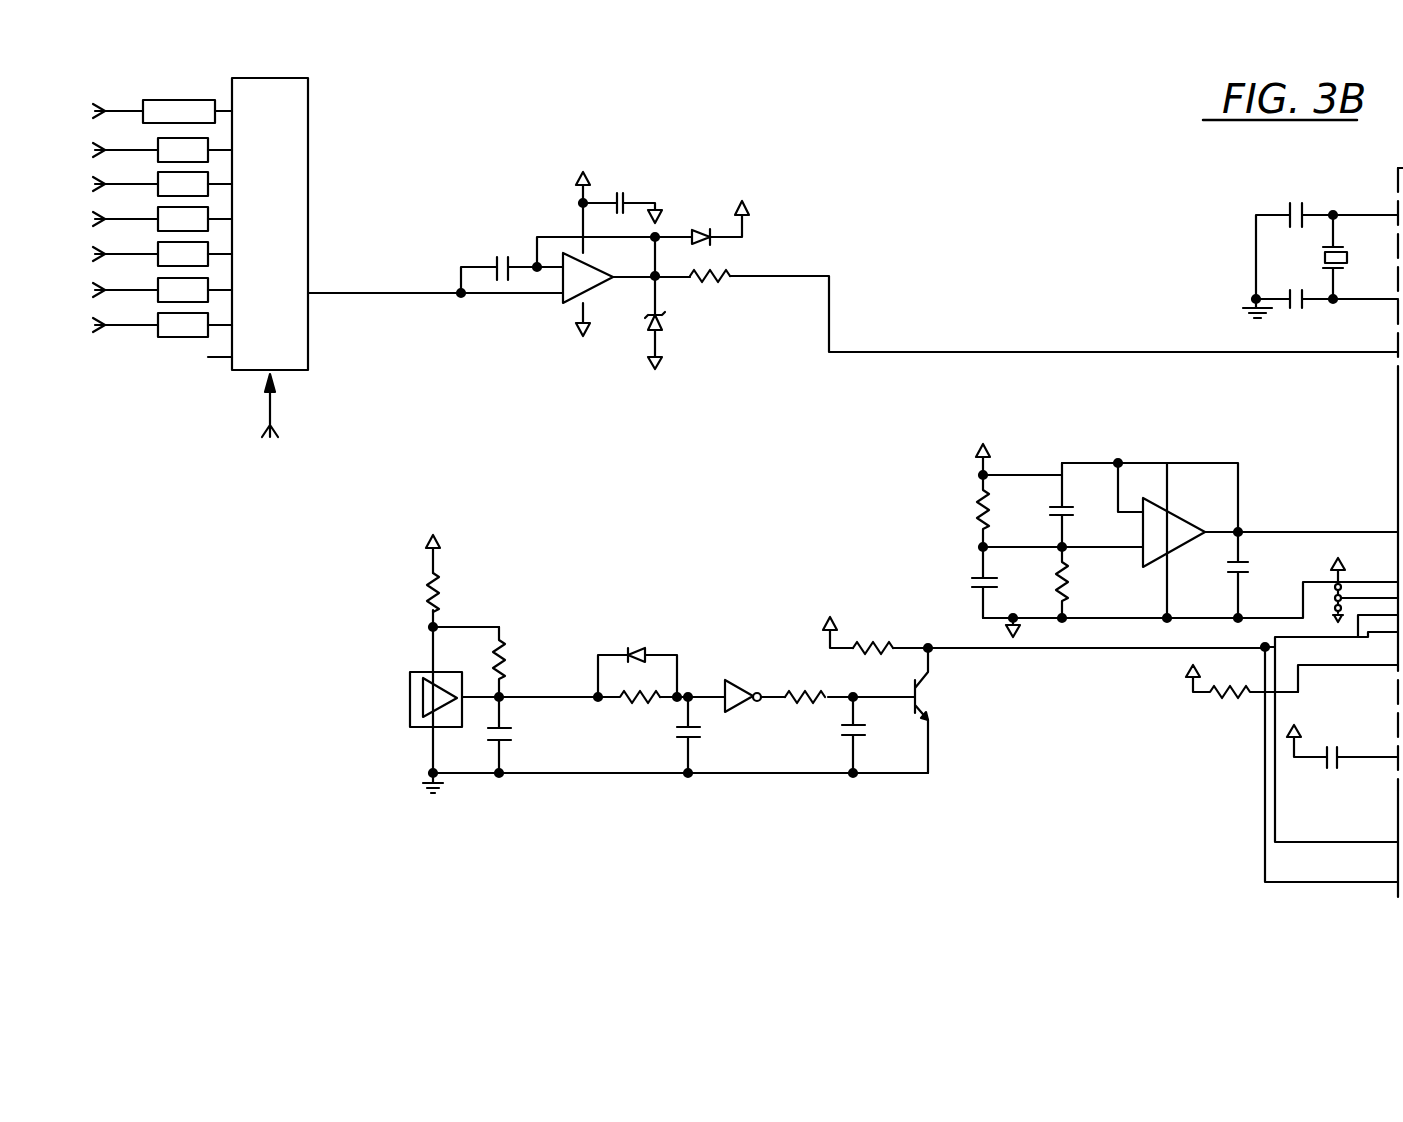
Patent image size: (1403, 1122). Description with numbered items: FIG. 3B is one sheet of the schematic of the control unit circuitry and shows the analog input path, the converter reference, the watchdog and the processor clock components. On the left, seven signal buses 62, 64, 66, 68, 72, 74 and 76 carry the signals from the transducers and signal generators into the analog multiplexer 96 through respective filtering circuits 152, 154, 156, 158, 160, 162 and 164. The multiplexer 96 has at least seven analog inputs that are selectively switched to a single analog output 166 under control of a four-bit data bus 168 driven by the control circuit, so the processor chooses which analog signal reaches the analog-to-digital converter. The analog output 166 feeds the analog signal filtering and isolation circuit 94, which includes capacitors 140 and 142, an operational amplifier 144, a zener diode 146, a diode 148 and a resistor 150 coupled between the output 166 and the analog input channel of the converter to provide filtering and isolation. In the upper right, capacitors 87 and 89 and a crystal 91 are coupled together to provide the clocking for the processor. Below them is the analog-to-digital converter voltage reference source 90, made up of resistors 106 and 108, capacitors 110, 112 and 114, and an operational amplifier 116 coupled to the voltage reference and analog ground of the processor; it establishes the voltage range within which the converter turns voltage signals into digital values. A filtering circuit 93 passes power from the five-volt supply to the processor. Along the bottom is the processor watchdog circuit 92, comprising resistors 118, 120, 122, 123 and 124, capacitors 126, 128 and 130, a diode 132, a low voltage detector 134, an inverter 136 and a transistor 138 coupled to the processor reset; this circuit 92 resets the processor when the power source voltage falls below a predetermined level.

The signal bus 62 is at (118, 104).
The signal bus 64 is at (134, 146).
The signal bus 66 is at (134, 180).
The signal bus 68 is at (134, 215).
The signal bus 72 is at (134, 250).
The signal bus 74 is at (134, 286).
The signal bus 76 is at (134, 321).
The filtering circuit 152 is at (190, 73).
The filtering circuit 154 is at (195, 150).
The filtering circuit 156 is at (195, 184).
The filtering circuit 158 is at (195, 219).
The filtering circuit 160 is at (195, 254).
The filtering circuit 162 is at (195, 290).
The filtering circuit 164 is at (195, 325).
The analog multiplexer 96 is at (310, 93).
The analog output 166 is at (395, 262).
The 4-bit data bus 168 is at (268, 394).
The analog signal filtering and isolation circuit 94 is at (728, 172).
The capacitor 140 is at (500, 250).
The capacitor 142 is at (620, 194).
The operational amplifier 144 is at (560, 298).
The zener diode 146 is at (668, 326).
The diode 148 is at (703, 228).
The resistor 150 is at (712, 288).
The capacitor 87 is at (1287, 213).
The capacitor 89 is at (1293, 311).
The crystal 91 is at (1322, 257).
The analog-to-digital converter voltage reference source 90 is at (1105, 624).
The resistor 106 is at (978, 506).
The resistor 108 is at (1070, 582).
The capacitor 110 is at (970, 583).
The capacitor 112 is at (1048, 508).
The capacitor 114 is at (1228, 566).
The operational amplifier 116 is at (1180, 521).
The filtering circuit 93 is at (1331, 768).
The processor watchdog circuit 92 is at (662, 785).
The resistor 118 is at (440, 600).
The resistor 120 is at (503, 648).
The resistor 122 is at (627, 703).
The resistor 123 is at (800, 690).
The resistor 124 is at (865, 645).
The capacitor 126 is at (508, 736).
The capacitor 128 is at (700, 735).
The capacitor 130 is at (845, 737).
The diode 132 is at (645, 652).
The low voltage detector 134 is at (415, 727).
The inverter 136 is at (735, 678).
The transistor 138 is at (932, 700).